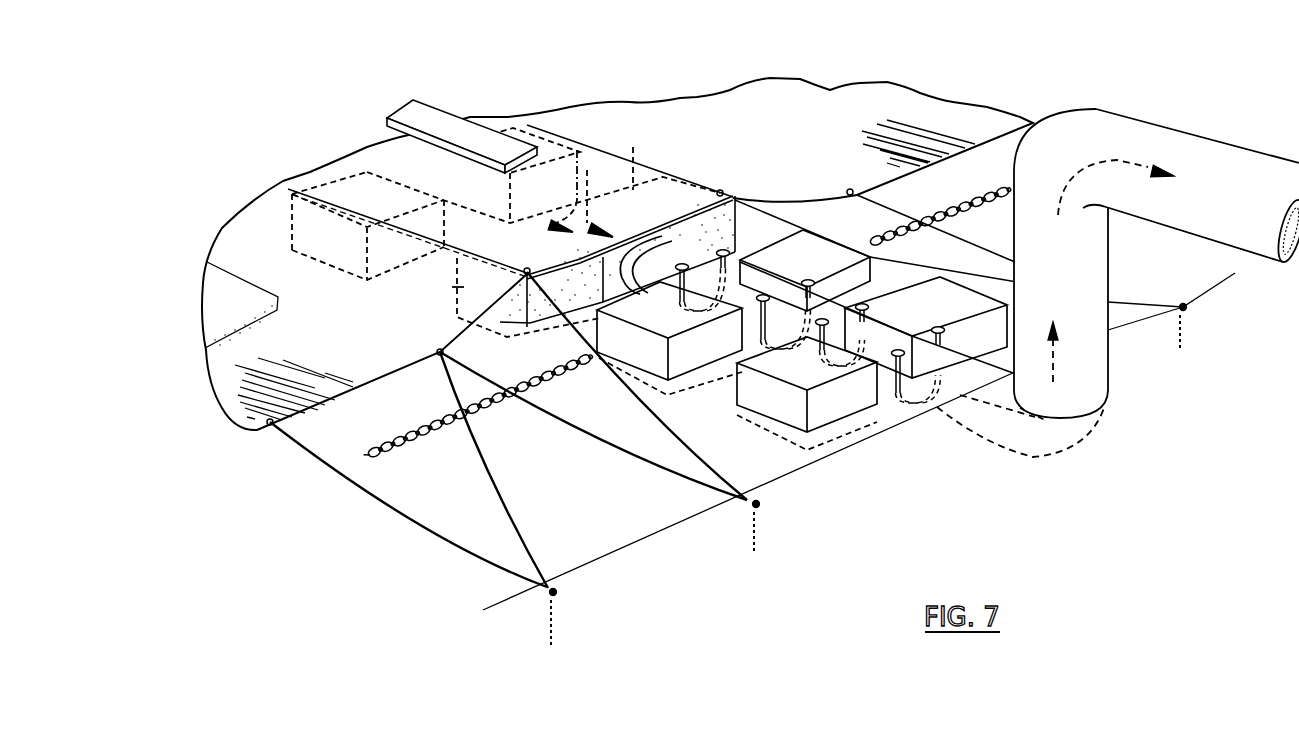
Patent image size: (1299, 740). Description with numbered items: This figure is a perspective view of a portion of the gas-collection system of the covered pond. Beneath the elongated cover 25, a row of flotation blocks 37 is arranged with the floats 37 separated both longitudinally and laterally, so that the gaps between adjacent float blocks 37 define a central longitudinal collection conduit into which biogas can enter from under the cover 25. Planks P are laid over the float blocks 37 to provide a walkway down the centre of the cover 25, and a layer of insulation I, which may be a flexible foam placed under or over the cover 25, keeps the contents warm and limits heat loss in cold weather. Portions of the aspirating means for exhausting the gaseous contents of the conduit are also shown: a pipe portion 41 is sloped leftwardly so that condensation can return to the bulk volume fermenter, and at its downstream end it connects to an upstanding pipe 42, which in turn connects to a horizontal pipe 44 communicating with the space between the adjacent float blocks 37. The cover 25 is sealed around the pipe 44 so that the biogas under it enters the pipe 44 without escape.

The layer of insulation I is at (211, 301).
The cover 25 is at (790, 138).
The flotation blocks 37 is at (337, 248).
The planks P is at (473, 137).
The pipe portion 41 is at (1167, 152).
The upstanding pipe 42 is at (1078, 265).
The horizontal pipe 44 is at (957, 380).